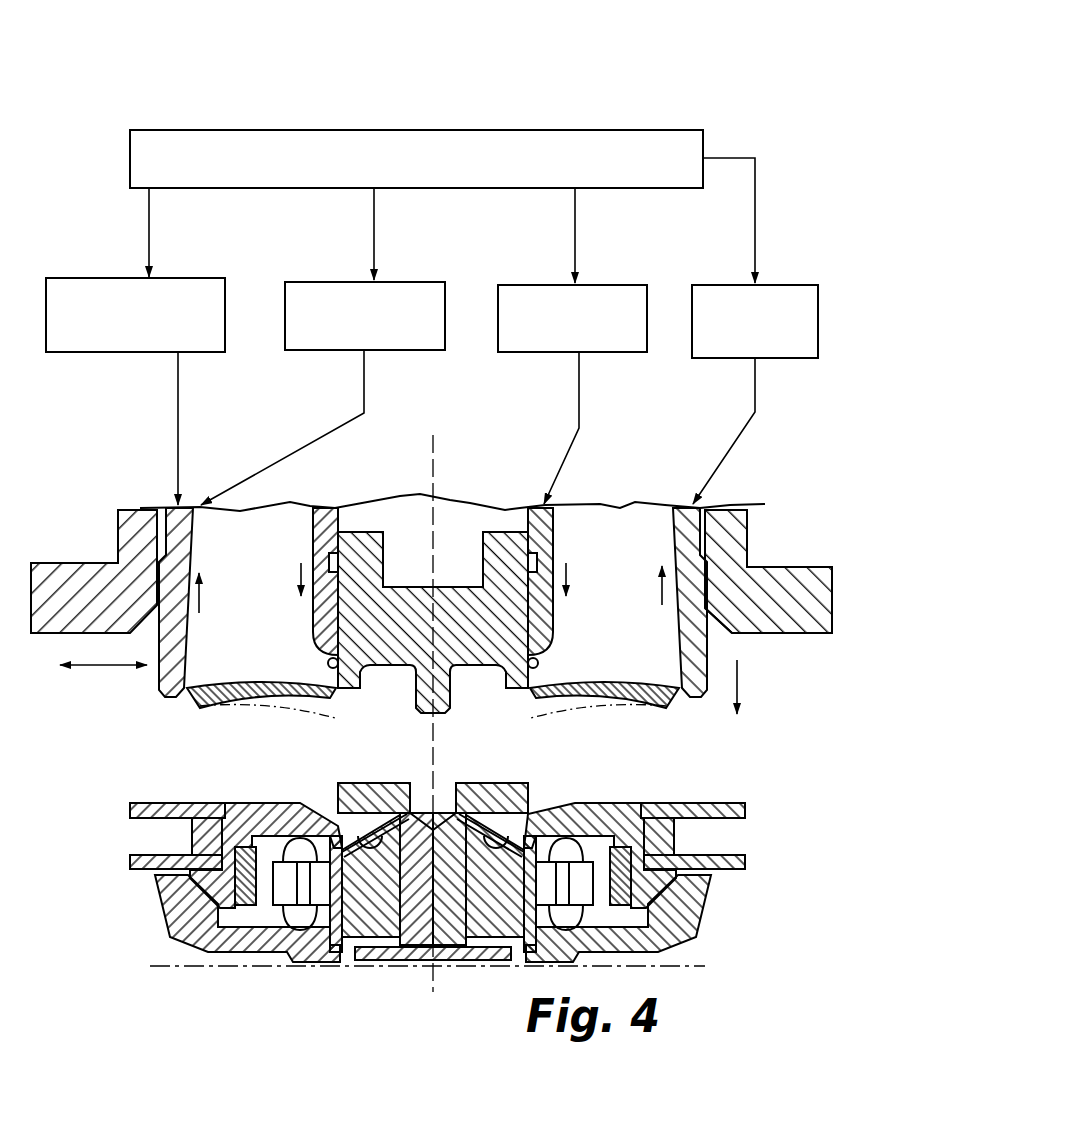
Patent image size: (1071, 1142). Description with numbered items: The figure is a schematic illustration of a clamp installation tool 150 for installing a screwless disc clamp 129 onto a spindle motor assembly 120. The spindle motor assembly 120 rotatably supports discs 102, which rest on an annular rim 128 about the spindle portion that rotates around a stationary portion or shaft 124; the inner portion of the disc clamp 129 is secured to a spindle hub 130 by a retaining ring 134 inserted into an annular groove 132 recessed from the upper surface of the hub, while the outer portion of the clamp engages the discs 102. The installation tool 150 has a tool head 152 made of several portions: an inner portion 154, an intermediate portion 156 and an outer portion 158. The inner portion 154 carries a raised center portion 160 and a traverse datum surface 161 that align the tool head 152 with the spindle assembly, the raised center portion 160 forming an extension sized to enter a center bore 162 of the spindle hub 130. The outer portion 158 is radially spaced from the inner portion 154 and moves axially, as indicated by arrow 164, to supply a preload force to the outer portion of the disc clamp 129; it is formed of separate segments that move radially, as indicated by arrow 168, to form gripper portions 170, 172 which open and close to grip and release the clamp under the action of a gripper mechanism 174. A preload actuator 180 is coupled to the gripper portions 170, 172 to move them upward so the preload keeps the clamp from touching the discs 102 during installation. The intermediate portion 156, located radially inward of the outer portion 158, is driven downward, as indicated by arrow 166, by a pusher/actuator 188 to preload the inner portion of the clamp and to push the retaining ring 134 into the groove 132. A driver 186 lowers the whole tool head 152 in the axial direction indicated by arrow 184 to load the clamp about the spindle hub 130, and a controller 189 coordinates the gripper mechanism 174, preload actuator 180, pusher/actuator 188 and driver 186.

The clamp installation tool 150 is at (860, 106).
The controller 189 is at (710, 141).
The gripper mechanism 174 is at (107, 268).
The preload actuator 180 is at (338, 271).
The pusher/actuator 188 is at (601, 267).
The driver 186 is at (789, 275).
The gripper portion 170 is at (163, 503).
The gripper portion 172 is at (695, 505).
The tool head 152 is at (847, 628).
The inner portion 154 is at (503, 530).
The intermediate portion 156 is at (556, 541).
The raised center portion 160 is at (451, 690).
The traverse datum surface 161 is at (349, 689).
The retaining ring 134 is at (541, 662).
The screwless disc clamp 129 is at (231, 687).
The arrow 164 is at (199, 597).
The arrow 166 is at (568, 584).
The arrow 168 is at (92, 668).
The arrow 184 is at (741, 684).
The outer portion 158 is at (706, 648).
The discs 102 is at (748, 806).
The annular groove 132 is at (531, 808).
The stationary portion or shaft 124 is at (410, 781).
The spindle hub 130 is at (503, 781).
The center bore 162 is at (438, 805).
The spindle motor assembly 120 is at (686, 795).
The annular rim 128 is at (681, 878).